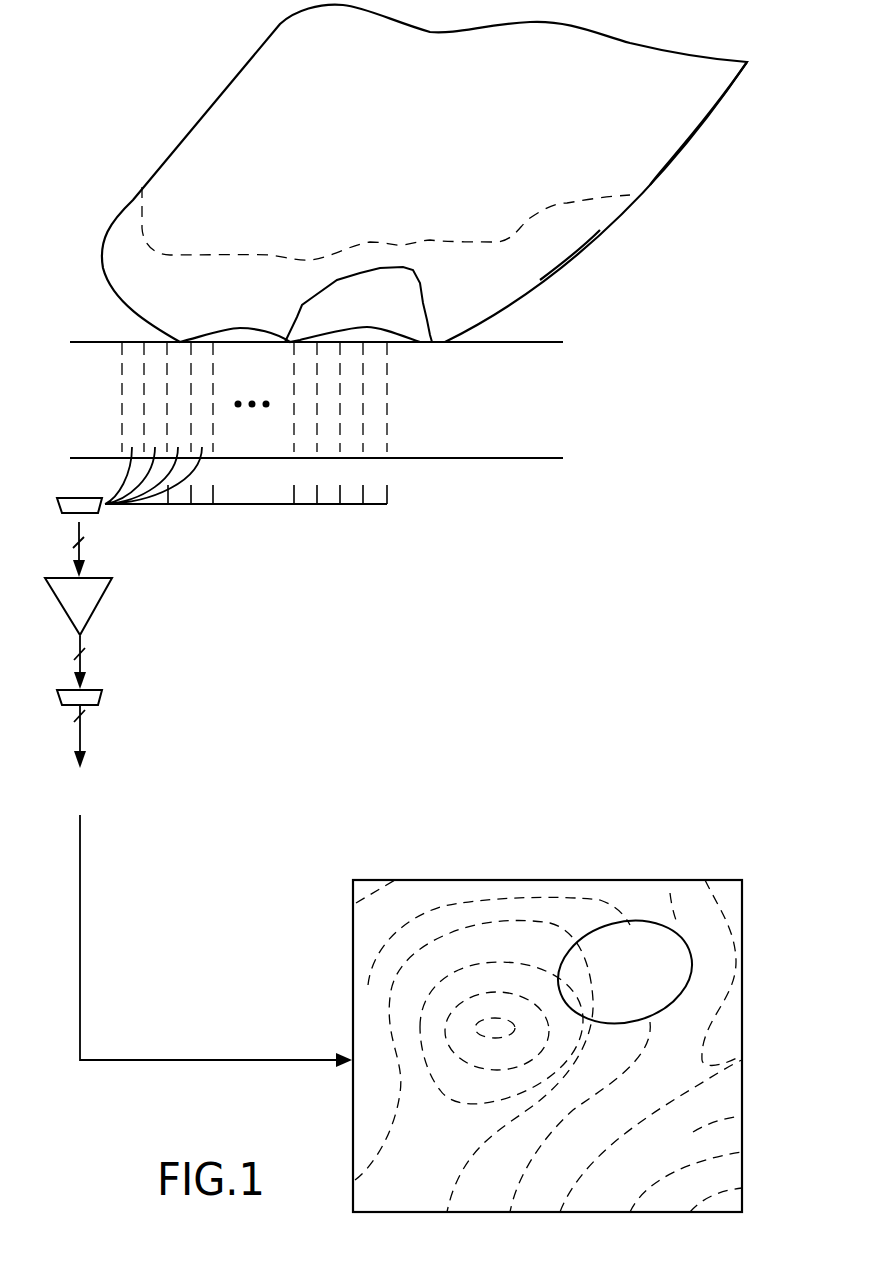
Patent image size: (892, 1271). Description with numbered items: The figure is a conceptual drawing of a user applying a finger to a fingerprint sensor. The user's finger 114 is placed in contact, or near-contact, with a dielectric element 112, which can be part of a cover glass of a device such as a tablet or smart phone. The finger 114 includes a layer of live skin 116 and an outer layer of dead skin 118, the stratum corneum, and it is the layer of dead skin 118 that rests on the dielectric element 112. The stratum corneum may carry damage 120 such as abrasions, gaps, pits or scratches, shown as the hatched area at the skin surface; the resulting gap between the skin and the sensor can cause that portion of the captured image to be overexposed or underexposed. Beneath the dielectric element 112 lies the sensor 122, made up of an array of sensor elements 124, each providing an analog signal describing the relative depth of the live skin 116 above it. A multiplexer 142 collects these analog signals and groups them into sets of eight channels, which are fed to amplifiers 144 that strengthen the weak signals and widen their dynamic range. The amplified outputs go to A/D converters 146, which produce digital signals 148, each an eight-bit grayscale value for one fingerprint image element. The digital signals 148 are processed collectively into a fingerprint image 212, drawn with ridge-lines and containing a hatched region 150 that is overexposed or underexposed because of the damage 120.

The dielectric element 112 is at (501, 443).
The finger 114 is at (225, 117).
The layer of live skin 116 is at (667, 160).
The layer of dead skin 118 is at (557, 265).
The damage 120 is at (421, 284).
The sensor 122 is at (262, 505).
The sensor element 124 is at (382, 508).
The multiplexer 142 is at (102, 510).
The amplifier 144 is at (98, 603).
The A/D converter 146 is at (102, 698).
The digital signals 148 is at (210, 923).
The region 150 is at (645, 905).
The fingerprint image 212 is at (760, 1018).